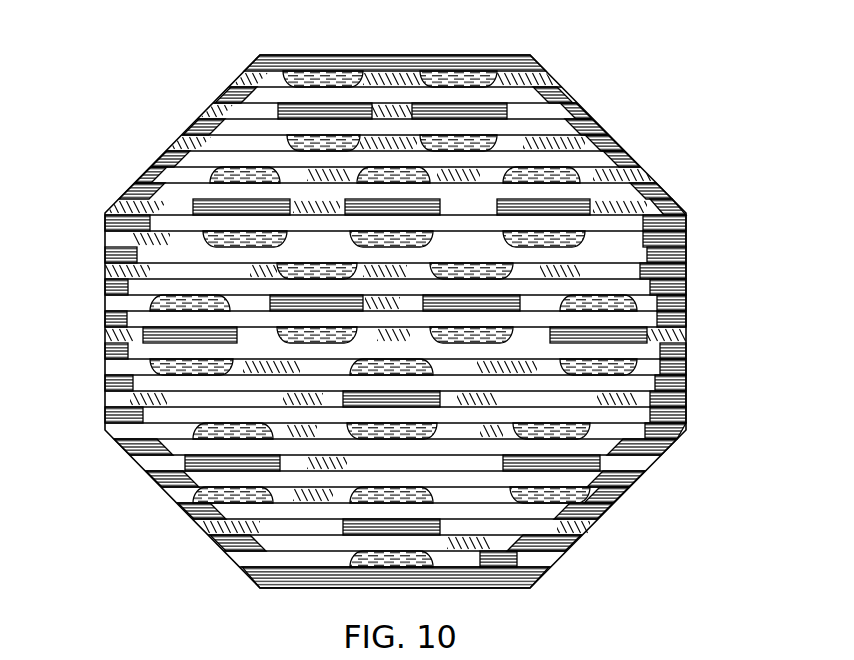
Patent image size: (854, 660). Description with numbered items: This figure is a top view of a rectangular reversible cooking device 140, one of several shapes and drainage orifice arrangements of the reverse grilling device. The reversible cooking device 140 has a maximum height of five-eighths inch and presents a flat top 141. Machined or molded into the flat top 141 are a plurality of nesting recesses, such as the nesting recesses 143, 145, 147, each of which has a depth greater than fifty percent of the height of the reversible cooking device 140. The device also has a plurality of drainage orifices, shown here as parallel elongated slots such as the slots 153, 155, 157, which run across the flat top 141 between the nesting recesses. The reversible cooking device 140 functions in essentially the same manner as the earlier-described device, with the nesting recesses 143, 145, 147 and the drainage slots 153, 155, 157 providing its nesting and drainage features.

The reversible cooking device 140 is at (662, 165).
The flat top 141 is at (565, 107).
The nesting recess 143 is at (303, 104).
The nesting recess 145 is at (217, 203).
The nesting recess 147 is at (173, 330).
The slot 153 is at (627, 253).
The slot 155 is at (632, 282).
The slot 157 is at (627, 347).